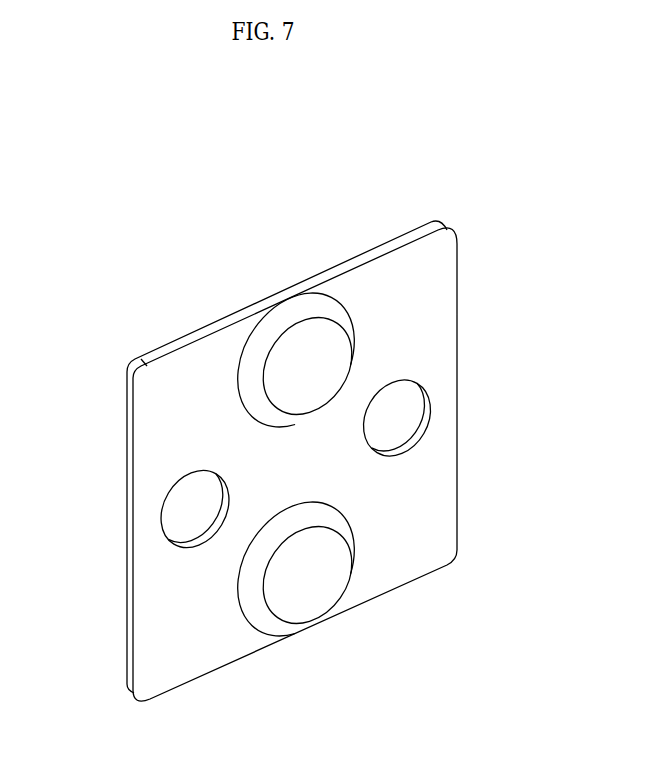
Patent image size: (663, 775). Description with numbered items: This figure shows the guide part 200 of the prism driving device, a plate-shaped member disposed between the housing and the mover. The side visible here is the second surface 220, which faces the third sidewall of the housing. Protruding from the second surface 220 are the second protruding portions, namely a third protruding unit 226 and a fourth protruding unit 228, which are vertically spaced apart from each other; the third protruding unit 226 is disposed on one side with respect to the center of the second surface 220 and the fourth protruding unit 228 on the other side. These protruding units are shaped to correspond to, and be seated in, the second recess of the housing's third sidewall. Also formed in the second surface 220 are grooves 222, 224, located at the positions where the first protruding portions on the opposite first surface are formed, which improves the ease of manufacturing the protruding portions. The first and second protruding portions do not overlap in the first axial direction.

The guide part 200 is at (163, 124).
The second surface 220 is at (433, 312).
The groove 222 is at (185, 514).
The groove 224 is at (400, 417).
The third protruding unit 226 is at (317, 357).
The fourth protruding unit 228 is at (312, 595).